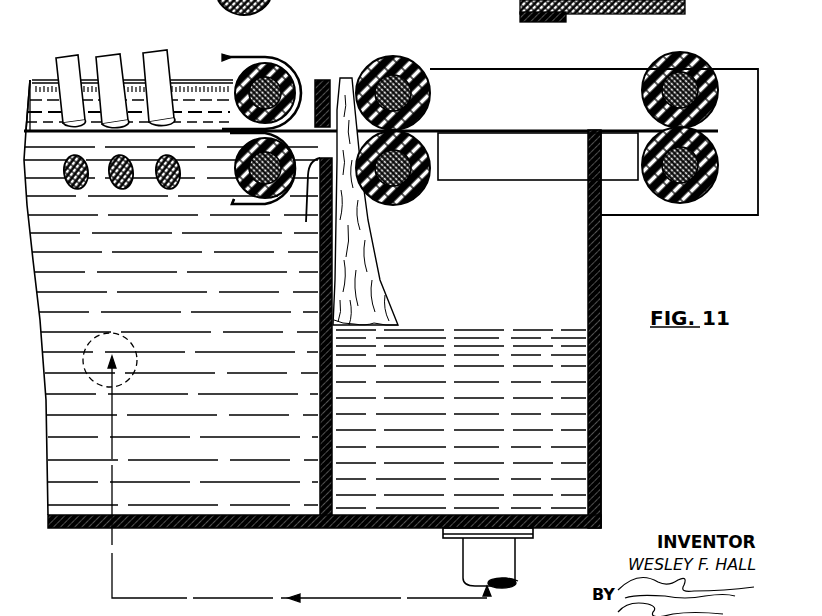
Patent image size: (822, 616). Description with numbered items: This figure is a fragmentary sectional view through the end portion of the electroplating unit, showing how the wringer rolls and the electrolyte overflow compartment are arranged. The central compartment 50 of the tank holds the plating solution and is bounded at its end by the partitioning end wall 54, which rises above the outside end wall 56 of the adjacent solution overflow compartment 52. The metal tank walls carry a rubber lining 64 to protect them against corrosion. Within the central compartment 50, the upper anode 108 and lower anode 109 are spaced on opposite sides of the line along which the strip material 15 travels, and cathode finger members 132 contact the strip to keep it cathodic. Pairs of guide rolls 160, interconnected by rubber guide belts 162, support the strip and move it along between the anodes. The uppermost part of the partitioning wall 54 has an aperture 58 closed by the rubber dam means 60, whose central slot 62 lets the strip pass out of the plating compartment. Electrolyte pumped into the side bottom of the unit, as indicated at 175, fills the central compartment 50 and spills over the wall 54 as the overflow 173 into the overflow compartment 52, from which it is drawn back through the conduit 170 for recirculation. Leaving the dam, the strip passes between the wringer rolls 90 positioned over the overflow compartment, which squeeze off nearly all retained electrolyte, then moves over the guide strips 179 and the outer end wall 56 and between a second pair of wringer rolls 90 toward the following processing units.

The strip material 15 is at (196, 128).
The central compartment 50 is at (223, 393).
The solution overflow compartment 52 is at (524, 278).
The partitioning end wall 54 is at (318, 262).
The outside end wall 56 is at (603, 313).
The aperture 58 is at (306, 218).
The rubber dam means 60 is at (345, 94).
The central slot 62 is at (320, 80).
The rubber lining 64 is at (588, 290).
The wringer rolls 90 is at (418, 64).
The upper anode 108 is at (27, 82).
The lower anode 109 is at (158, 191).
The cathode finger member 132 is at (156, 50).
The guide roll 160 is at (272, 64).
The rubber guide belt 162 is at (240, 207).
The conduit 170 is at (513, 552).
The electrolyte overflow 173 is at (382, 268).
The electrolyte inlet 175 is at (121, 347).
The guide strip 179 is at (553, 172).